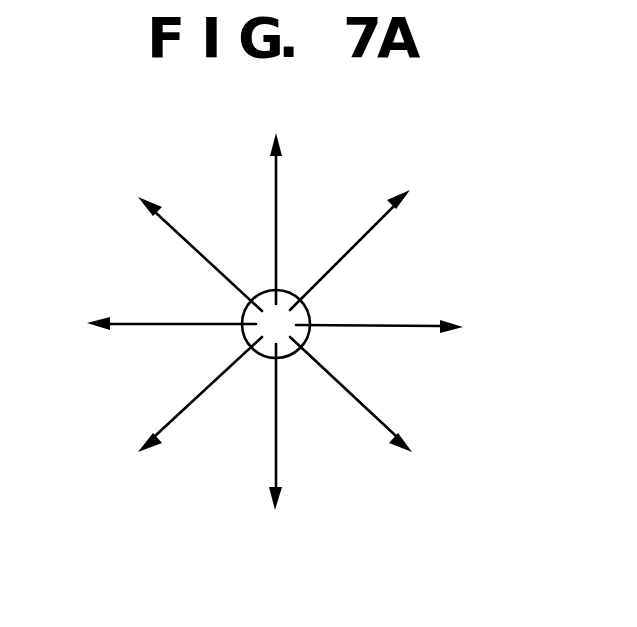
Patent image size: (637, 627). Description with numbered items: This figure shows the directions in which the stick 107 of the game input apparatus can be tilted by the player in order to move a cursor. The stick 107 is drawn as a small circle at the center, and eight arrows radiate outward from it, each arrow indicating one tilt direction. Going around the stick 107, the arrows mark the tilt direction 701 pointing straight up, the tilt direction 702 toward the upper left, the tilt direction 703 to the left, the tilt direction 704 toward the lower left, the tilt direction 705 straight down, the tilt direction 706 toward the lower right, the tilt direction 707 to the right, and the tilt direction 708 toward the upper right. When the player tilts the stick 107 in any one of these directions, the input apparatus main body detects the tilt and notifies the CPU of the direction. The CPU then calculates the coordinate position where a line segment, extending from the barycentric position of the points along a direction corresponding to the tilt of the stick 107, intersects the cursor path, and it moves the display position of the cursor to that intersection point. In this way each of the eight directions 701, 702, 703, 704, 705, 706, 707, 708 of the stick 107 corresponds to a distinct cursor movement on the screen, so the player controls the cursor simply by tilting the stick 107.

The tilt direction 701 is at (277, 187).
The tilt direction 702 is at (205, 258).
The tilt direction 703 is at (157, 323).
The tilt direction 704 is at (175, 413).
The tilt direction 705 is at (273, 448).
The tilt direction 706 is at (362, 402).
The tilt direction 707 is at (357, 326).
The tilt direction 708 is at (348, 252).
The stick 107 is at (290, 350).